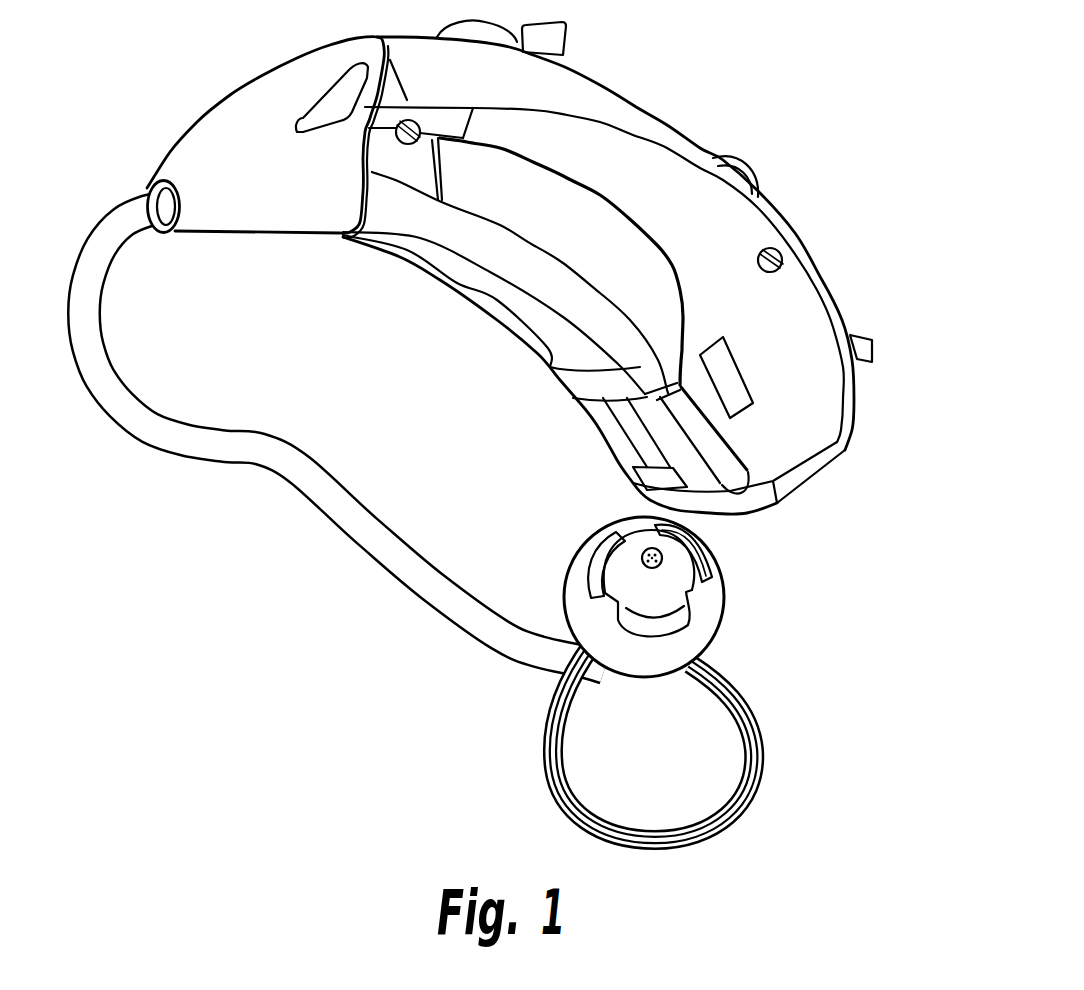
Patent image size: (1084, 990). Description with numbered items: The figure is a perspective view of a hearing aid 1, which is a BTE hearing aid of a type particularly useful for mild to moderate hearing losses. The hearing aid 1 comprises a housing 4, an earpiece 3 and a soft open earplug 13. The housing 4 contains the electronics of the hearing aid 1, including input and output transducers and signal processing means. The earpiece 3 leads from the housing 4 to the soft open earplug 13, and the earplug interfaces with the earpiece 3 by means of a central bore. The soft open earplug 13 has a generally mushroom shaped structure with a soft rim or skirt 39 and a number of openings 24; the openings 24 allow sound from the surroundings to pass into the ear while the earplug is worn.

The hearing aid 1 is at (710, 28).
The earpiece 3 is at (120, 433).
The housing 4 is at (800, 247).
The soft open earplug 13 is at (745, 622).
The openings 24 is at (668, 627).
The soft rim or skirt 39 is at (713, 573).